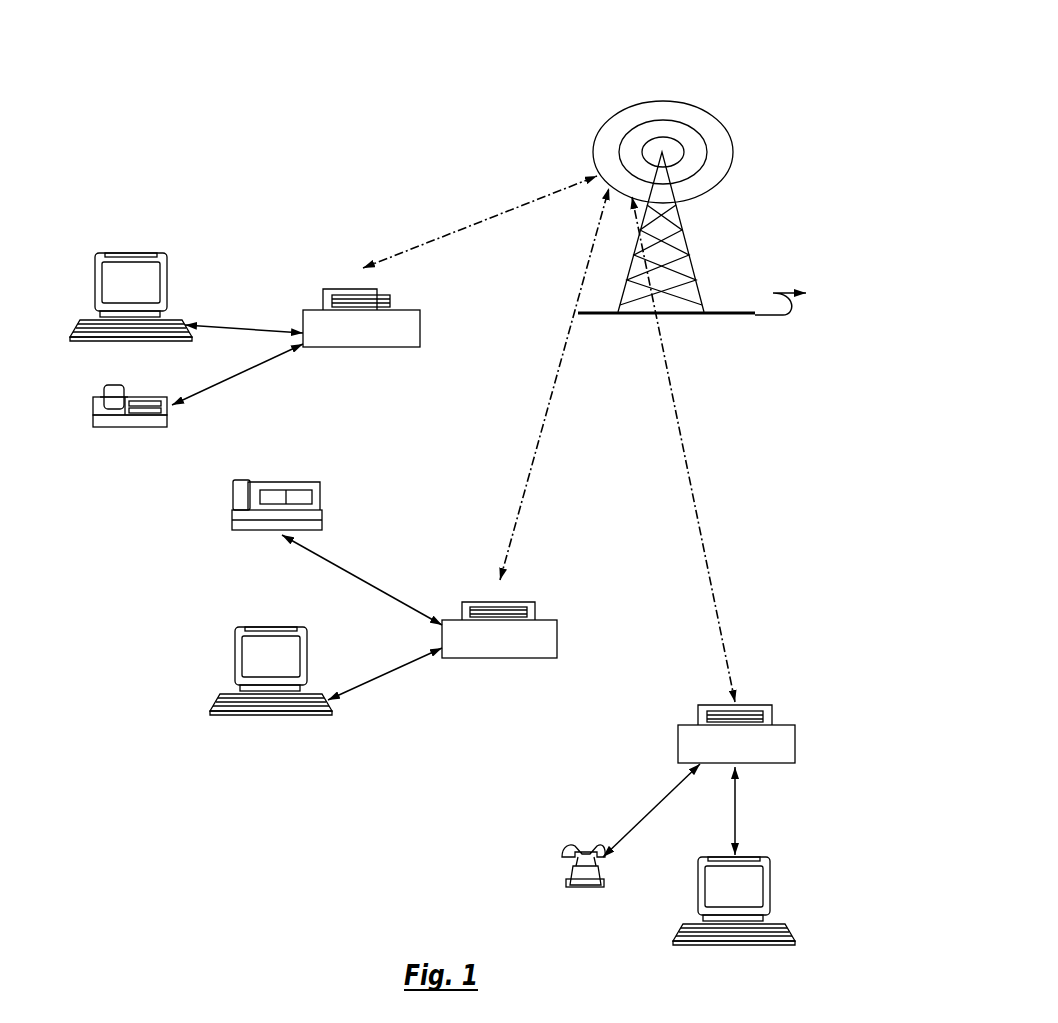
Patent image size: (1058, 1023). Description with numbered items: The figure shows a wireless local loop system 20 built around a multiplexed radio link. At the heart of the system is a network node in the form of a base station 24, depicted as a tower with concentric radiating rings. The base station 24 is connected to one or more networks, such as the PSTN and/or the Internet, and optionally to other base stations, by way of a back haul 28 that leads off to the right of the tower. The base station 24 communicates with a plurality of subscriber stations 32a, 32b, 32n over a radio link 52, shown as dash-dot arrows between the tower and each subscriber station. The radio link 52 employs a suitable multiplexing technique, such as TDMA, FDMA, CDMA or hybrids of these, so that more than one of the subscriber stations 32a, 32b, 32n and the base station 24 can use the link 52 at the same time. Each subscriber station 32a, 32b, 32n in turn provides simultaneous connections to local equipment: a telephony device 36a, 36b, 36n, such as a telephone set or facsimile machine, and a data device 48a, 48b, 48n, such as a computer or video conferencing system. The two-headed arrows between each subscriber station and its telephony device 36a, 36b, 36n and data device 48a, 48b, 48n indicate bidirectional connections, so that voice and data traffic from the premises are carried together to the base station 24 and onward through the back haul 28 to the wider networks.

The wireless local loop system 20 is at (419, 64).
The base station 24 is at (724, 207).
The back haul 28 is at (817, 305).
The multiplexed radio link 52 is at (591, 439).
The subscriber station 32a is at (386, 336).
The subscriber station 32b is at (504, 647).
The subscriber station 32n is at (635, 737).
The telephony device 36a is at (136, 421).
The telephony device 36b is at (337, 494).
The telephony device 36n is at (579, 897).
The data device 48a is at (116, 312).
The data device 48b is at (257, 686).
The data device 48n is at (739, 928).